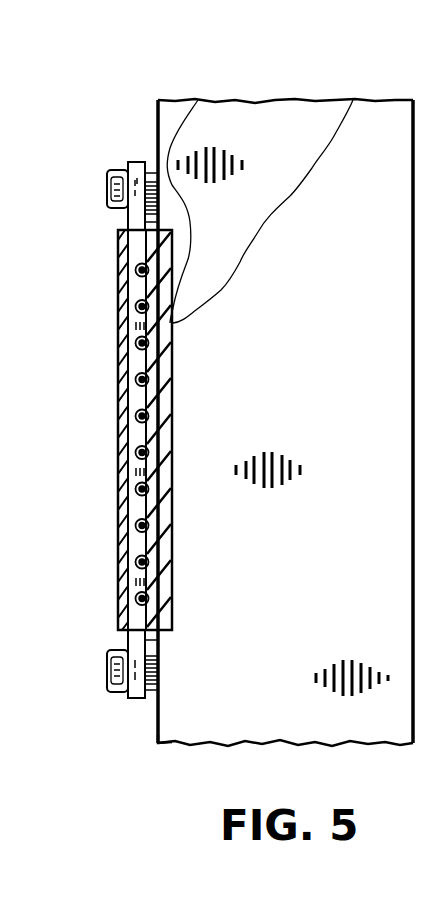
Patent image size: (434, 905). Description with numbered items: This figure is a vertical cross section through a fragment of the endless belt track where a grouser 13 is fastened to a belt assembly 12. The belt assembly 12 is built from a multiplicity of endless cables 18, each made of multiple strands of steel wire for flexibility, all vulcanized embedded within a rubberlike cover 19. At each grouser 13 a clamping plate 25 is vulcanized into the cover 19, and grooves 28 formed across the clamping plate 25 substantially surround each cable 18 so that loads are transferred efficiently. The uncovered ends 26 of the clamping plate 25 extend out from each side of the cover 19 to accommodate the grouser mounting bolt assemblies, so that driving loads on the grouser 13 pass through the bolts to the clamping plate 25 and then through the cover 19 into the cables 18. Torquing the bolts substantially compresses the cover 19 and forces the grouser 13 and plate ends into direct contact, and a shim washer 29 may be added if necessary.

The belt assembly 12 is at (197, 100).
The grouser 13 is at (360, 716).
The cable 18 is at (145, 258).
The rubberlike cover 19 is at (255, 125).
The clamping plate 25 is at (132, 223).
The uncovered end 26 is at (140, 160).
The groove 28 is at (135, 488).
The shim washer 29 is at (177, 740).